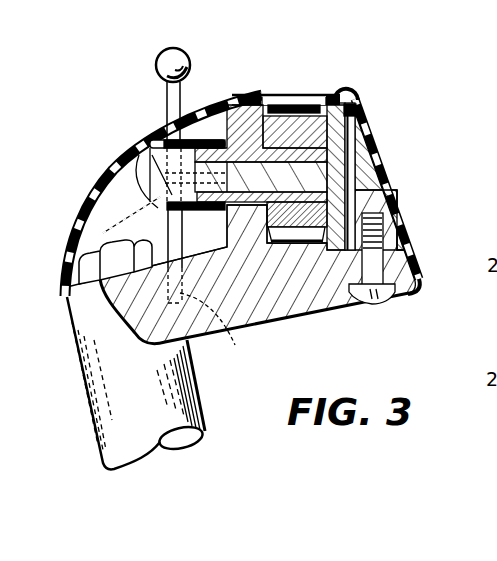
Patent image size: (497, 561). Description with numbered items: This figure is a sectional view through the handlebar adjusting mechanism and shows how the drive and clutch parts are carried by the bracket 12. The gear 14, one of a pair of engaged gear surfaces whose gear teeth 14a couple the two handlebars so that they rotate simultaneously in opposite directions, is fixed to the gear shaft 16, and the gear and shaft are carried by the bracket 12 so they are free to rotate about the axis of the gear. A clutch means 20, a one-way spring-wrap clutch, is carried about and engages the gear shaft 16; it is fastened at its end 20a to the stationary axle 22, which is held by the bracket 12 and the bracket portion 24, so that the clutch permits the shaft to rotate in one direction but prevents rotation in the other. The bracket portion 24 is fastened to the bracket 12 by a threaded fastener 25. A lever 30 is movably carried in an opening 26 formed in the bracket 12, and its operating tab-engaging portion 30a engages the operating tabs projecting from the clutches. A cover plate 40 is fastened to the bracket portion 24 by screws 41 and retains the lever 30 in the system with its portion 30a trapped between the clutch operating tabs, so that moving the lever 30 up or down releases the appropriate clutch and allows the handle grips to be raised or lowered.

The bracket 12 is at (299, 314).
The gear 14 is at (283, 106).
The gear teeth 14a is at (300, 107).
The gear shaft 16 is at (243, 147).
The clutch means 20 is at (211, 122).
The clutch end 20a is at (148, 141).
The stationary axle 22 is at (367, 177).
The bracket portion 24 is at (362, 113).
The threaded fastener 25 is at (382, 298).
The opening 26 is at (212, 322).
The lever 30 is at (164, 89).
The operating tab-engaging portion 30a is at (115, 251).
The cover plate 40 is at (385, 147).
The screw 41 is at (357, 89).